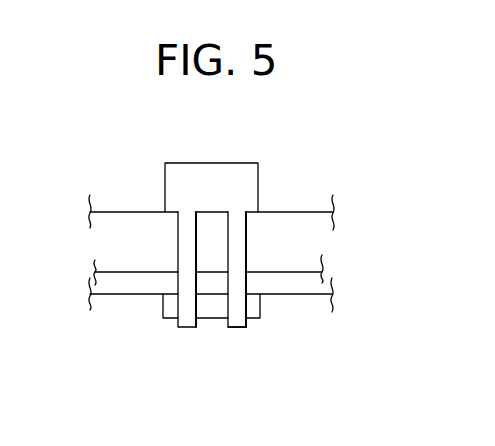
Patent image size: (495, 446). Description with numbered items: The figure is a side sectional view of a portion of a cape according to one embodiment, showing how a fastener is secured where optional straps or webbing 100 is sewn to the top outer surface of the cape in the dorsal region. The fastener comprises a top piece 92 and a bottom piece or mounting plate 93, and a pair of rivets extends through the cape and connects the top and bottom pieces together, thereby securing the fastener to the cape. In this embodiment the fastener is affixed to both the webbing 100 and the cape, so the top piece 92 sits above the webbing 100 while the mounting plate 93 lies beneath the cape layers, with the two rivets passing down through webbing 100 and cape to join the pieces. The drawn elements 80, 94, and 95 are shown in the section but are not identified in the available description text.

The straps or webbing 100 is at (302, 212).
The top piece 92 is at (258, 189).
The lower board 80 is at (308, 294).
The first pin 94 is at (186, 328).
The bottom piece or mounting plate 93 is at (260, 318).
The pin tip 95 is at (235, 328).